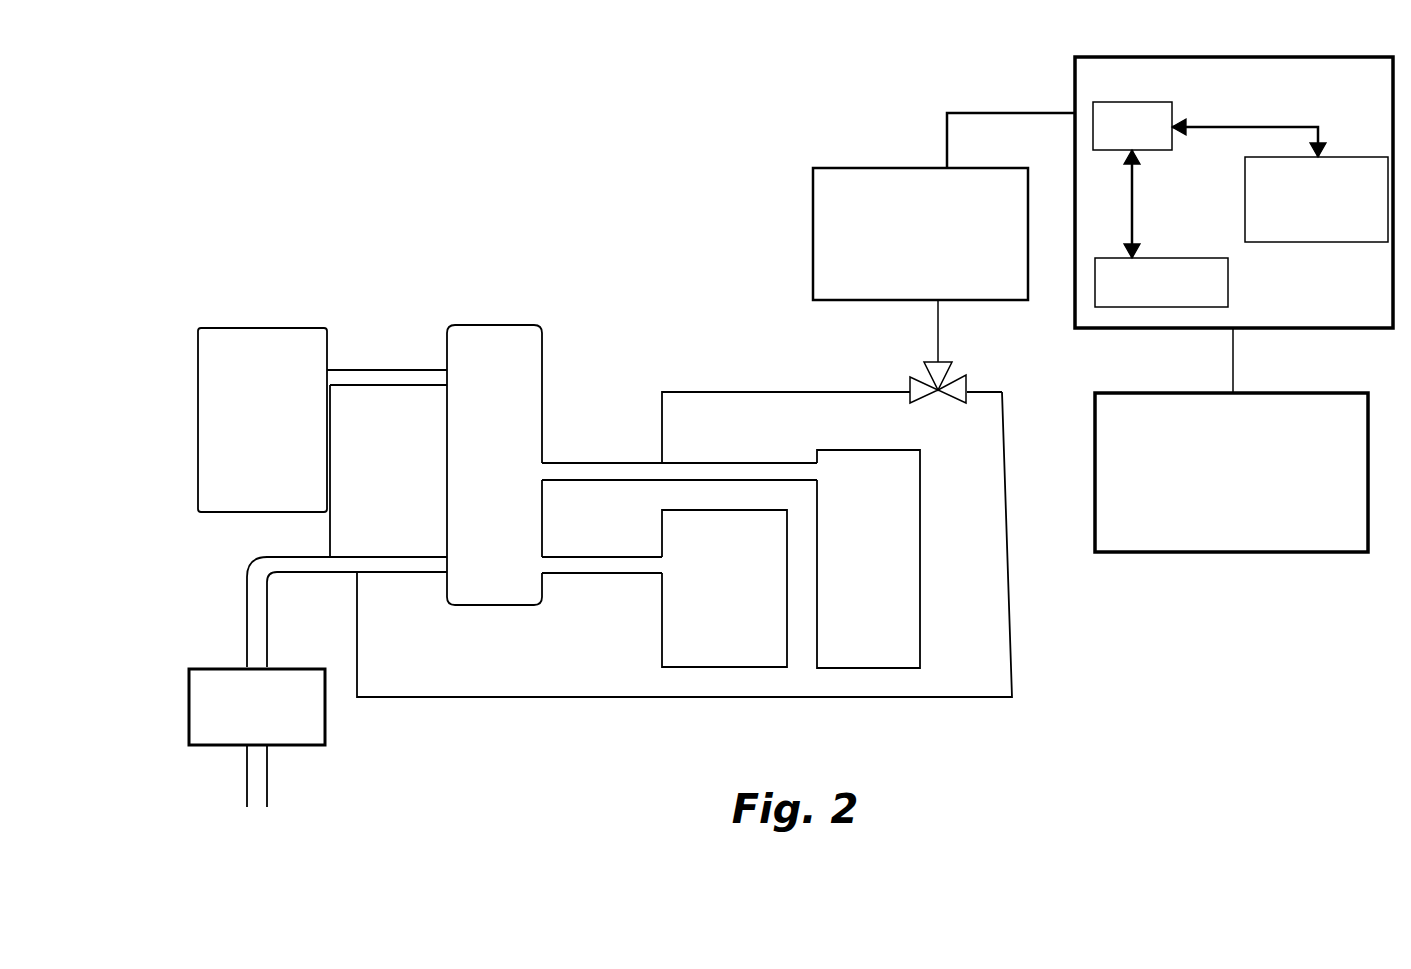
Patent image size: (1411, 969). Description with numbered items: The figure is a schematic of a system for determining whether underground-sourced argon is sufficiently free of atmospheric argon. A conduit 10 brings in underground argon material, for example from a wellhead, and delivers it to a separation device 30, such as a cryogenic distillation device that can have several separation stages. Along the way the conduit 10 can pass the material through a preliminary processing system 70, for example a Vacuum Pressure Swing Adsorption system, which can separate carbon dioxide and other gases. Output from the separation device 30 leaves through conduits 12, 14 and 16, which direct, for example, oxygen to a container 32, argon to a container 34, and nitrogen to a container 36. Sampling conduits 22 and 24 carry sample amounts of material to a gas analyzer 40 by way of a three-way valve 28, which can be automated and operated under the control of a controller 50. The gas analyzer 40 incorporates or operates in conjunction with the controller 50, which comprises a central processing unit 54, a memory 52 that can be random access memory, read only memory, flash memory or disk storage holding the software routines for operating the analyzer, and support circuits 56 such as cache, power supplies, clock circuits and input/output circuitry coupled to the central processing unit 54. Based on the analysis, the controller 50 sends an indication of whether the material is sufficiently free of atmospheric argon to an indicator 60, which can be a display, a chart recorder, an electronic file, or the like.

The conduit 10 is at (245, 587).
The conduit 12 is at (597, 575).
The conduit 14 is at (572, 482).
The conduit 16 is at (348, 370).
The sampling conduit 22 is at (473, 700).
The sampling conduit 24 is at (700, 393).
The three-way valve 28 is at (917, 377).
The separation device 30 is at (543, 395).
The container 32 is at (663, 617).
The container 34 is at (913, 550).
The container 36 is at (330, 460).
The gas analyzer 40 is at (812, 202).
The controller 50 is at (1075, 60).
The memory 52 is at (1235, 297).
The central processing unit (CPU) 54 is at (1175, 100).
The support circuits 56 is at (1345, 155).
The indicator 60 is at (1175, 552).
The preliminary processing system 70 is at (283, 747).